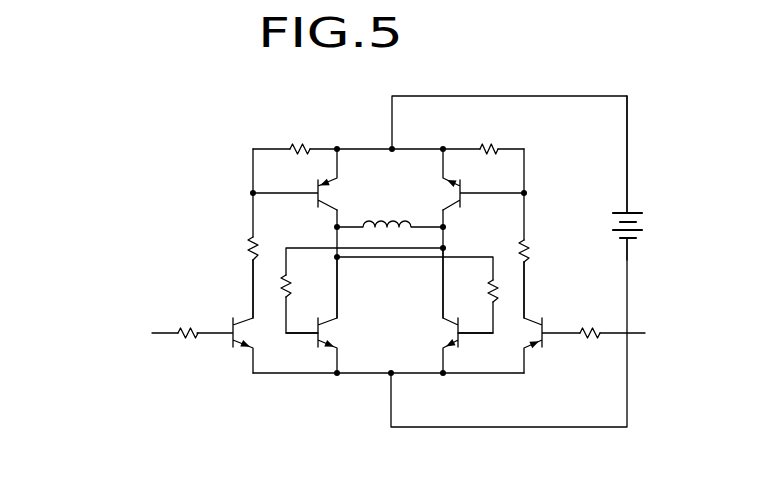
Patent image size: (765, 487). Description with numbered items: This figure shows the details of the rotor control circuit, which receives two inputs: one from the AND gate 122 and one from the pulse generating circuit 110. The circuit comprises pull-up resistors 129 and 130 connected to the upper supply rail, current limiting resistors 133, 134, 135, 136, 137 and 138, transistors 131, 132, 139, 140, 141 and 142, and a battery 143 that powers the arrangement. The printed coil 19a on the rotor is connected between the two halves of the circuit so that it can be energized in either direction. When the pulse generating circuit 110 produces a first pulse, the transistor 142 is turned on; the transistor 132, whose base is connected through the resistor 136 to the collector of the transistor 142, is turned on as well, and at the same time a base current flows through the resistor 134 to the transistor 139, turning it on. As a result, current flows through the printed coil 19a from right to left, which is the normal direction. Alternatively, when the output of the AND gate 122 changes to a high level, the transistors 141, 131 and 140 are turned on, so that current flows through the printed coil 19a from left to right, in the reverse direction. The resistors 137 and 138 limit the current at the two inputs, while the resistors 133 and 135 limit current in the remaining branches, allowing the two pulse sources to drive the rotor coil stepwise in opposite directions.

The pull-up resistor 129 is at (296, 141).
The pull-up resistor 130 is at (488, 141).
The transistor 131 is at (325, 193).
The transistor 132 is at (466, 186).
The printed coil 19a is at (390, 220).
The battery 143 is at (613, 225).
The current limiting resistor 133 is at (250, 248).
The current limiting resistor 134 is at (292, 293).
The current limiting resistor 135 is at (487, 292).
The current limiting resistor 136 is at (531, 250).
The current limiting resistor 137 is at (185, 320).
The current limiting resistor 138 is at (588, 325).
The transistor 139 is at (327, 333).
The transistor 140 is at (452, 333).
The transistor 141 is at (231, 317).
The transistor 142 is at (535, 333).
The AND gate 122 is at (112, 327).
The pulse generating circuit 110 is at (666, 356).